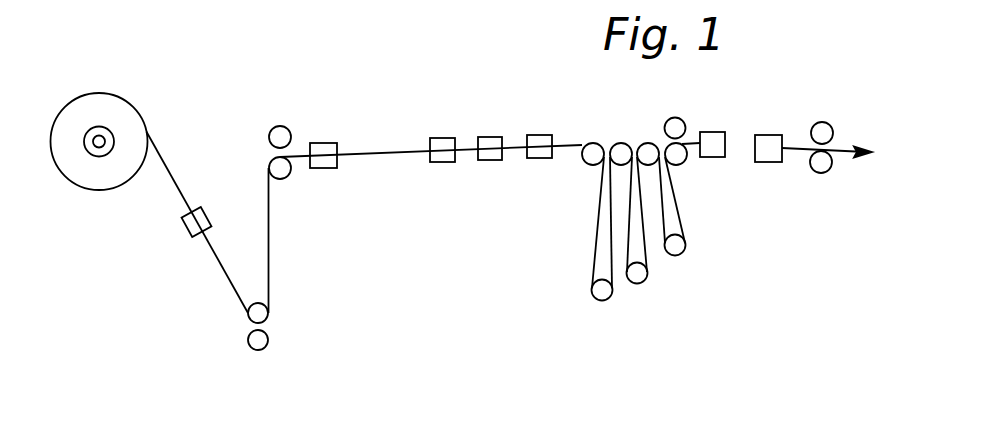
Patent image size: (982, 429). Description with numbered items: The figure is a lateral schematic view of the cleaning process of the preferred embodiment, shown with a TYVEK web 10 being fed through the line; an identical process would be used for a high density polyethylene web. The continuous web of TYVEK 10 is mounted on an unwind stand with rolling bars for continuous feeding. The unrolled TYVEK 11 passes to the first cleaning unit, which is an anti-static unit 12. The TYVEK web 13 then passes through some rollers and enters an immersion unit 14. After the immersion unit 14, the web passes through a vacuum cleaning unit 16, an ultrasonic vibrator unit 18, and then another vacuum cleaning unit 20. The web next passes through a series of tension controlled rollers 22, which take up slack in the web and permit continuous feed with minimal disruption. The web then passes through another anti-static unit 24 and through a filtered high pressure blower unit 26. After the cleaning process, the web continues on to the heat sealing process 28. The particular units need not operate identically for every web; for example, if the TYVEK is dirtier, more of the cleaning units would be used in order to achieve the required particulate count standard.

The TYVEK web 10 is at (140, 110).
The unrolled TYVEK 11 is at (173, 173).
The anti-static unit 12 is at (184, 227).
The TYVEK web 13 is at (292, 165).
The immersion unit 14 is at (330, 143).
The vacuum cleaning unit 16 is at (443, 138).
The ultrasonic vibrator unit 18 is at (492, 137).
The vacuum cleaning unit 20 is at (538, 135).
The tension controlled rollers 22 is at (705, 302).
The anti-static unit 24 is at (713, 132).
The filtered high pressure blower unit 26 is at (775, 162).
The heat sealing process 28 is at (843, 147).